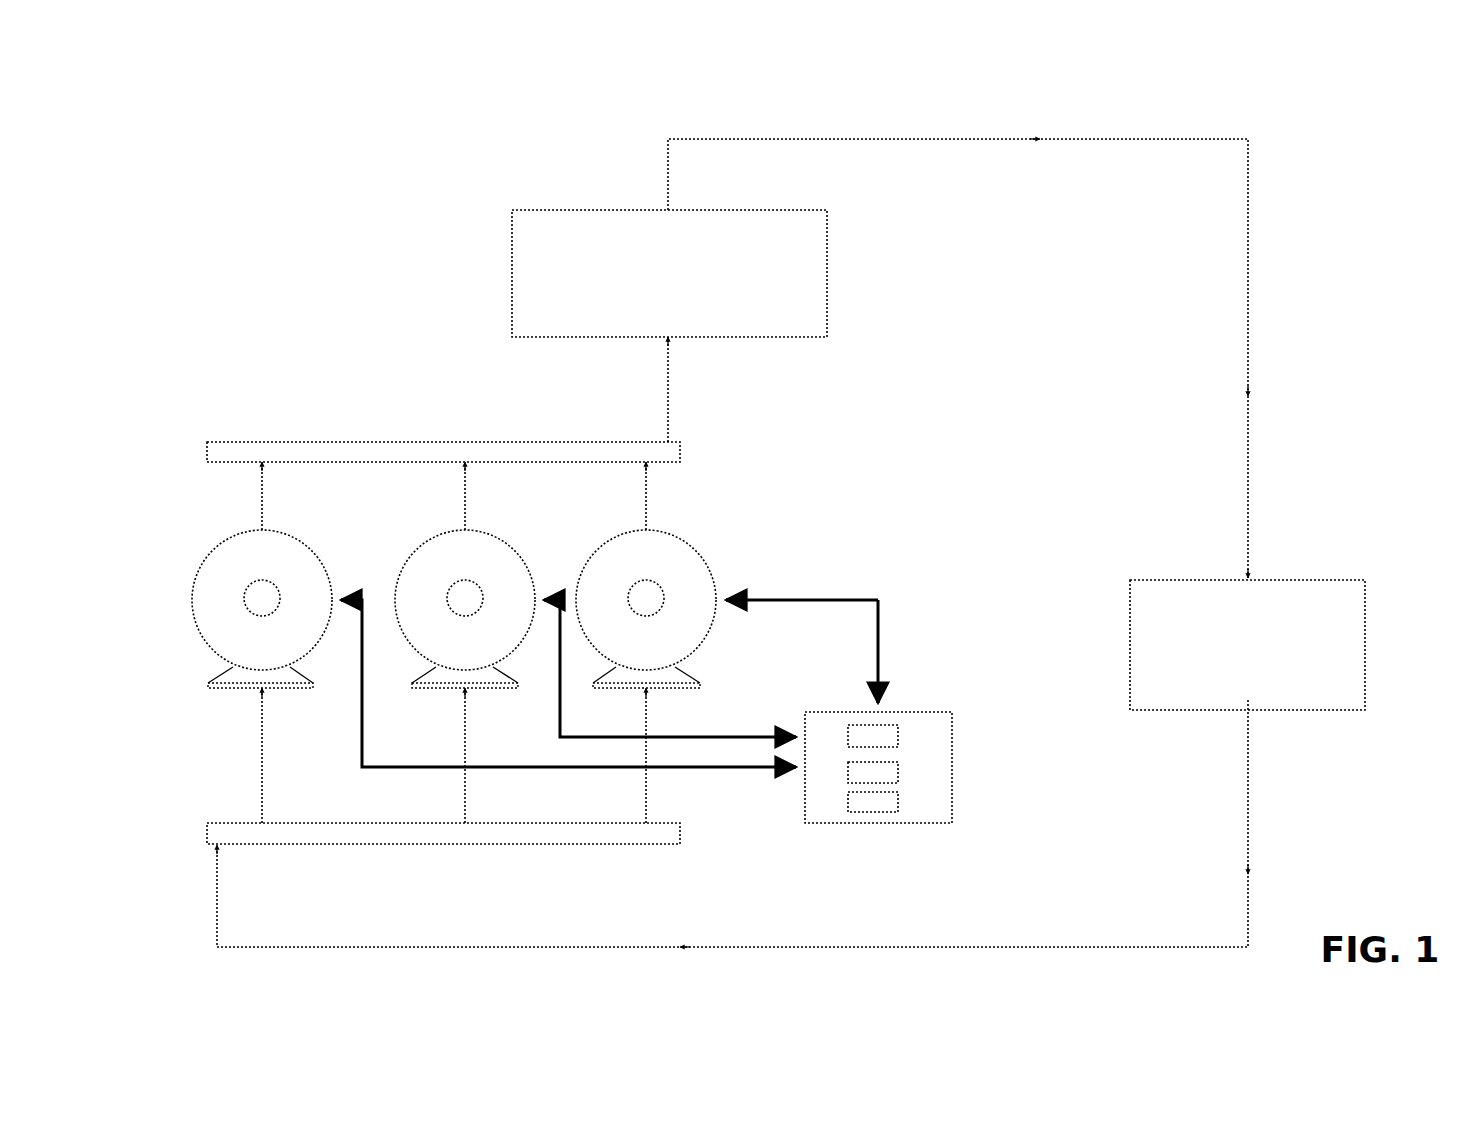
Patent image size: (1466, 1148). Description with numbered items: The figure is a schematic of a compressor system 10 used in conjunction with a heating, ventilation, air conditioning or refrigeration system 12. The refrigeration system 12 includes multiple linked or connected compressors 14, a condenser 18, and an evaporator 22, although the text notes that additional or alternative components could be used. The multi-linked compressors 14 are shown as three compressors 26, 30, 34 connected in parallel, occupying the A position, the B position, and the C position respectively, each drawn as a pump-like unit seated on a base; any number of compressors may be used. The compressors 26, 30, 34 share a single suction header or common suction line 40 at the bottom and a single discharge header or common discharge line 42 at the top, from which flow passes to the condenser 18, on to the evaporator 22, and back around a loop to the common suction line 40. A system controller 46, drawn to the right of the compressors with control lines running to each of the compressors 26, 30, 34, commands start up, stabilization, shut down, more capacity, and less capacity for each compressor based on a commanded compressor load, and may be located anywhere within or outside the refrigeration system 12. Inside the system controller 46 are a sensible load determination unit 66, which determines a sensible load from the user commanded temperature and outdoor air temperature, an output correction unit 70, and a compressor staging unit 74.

The compressor system 10 is at (1335, 154).
The refrigeration system 12 is at (1312, 333).
The multi-linked compressors 14 is at (178, 425).
The condenser 18 is at (511, 218).
The evaporator 22 is at (1126, 579).
The first compressor 26 is at (204, 557).
The second compressor 30 is at (405, 554).
The third compressor 34 is at (701, 550).
The common suction line 40 is at (198, 822).
The common discharge line 42 is at (401, 437).
The system controller 46 is at (957, 821).
The sensible load determination unit 66 is at (901, 727).
The output correction unit 70 is at (901, 767).
The compressor staging unit 74 is at (901, 797).
The A position A is at (197, 623).
The B position B is at (512, 540).
The C position C is at (706, 650).